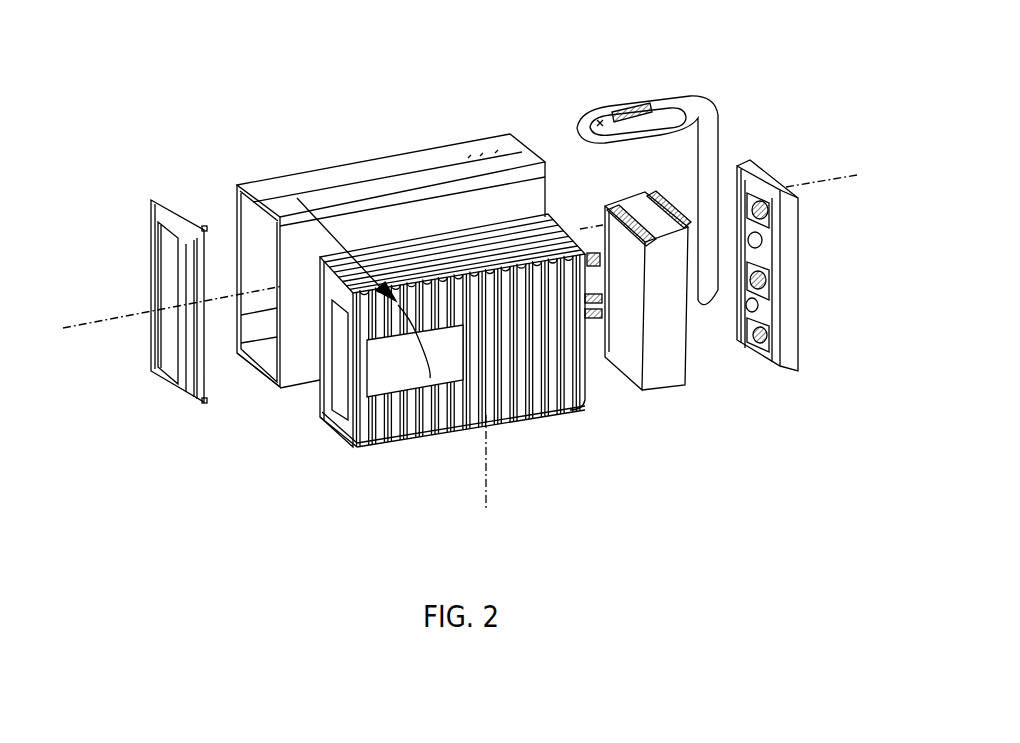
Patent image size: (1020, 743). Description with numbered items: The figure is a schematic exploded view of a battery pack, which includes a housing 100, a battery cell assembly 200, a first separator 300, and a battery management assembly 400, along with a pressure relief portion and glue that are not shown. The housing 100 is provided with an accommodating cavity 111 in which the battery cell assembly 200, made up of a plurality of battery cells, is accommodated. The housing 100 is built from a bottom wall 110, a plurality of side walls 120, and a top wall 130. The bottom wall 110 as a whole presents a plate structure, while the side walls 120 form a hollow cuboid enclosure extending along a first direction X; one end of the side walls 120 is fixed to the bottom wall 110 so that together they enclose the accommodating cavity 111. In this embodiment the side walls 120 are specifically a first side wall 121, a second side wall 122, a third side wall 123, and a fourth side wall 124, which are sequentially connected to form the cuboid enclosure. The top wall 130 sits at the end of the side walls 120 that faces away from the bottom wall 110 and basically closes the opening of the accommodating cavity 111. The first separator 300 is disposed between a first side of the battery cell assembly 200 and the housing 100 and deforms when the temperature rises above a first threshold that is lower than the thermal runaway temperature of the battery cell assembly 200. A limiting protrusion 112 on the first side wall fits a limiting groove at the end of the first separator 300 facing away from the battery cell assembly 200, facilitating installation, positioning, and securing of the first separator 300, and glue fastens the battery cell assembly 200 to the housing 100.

The housing 100 is at (517, 63).
The bottom wall 110 is at (150, 213).
The accommodating cavity 111 is at (270, 247).
The limiting protrusion 112 is at (259, 178).
The side walls 120 is at (390, 197).
The first side wall 121 is at (337, 337).
The second side wall 122 is at (297, 347).
The third side wall 123 is at (245, 360).
The fourth side wall 124 is at (177, 313).
The top wall 130 is at (720, 200).
The battery cell assembly 200 is at (512, 415).
The first separator 300 is at (427, 437).
The battery management assembly 400 is at (668, 392).